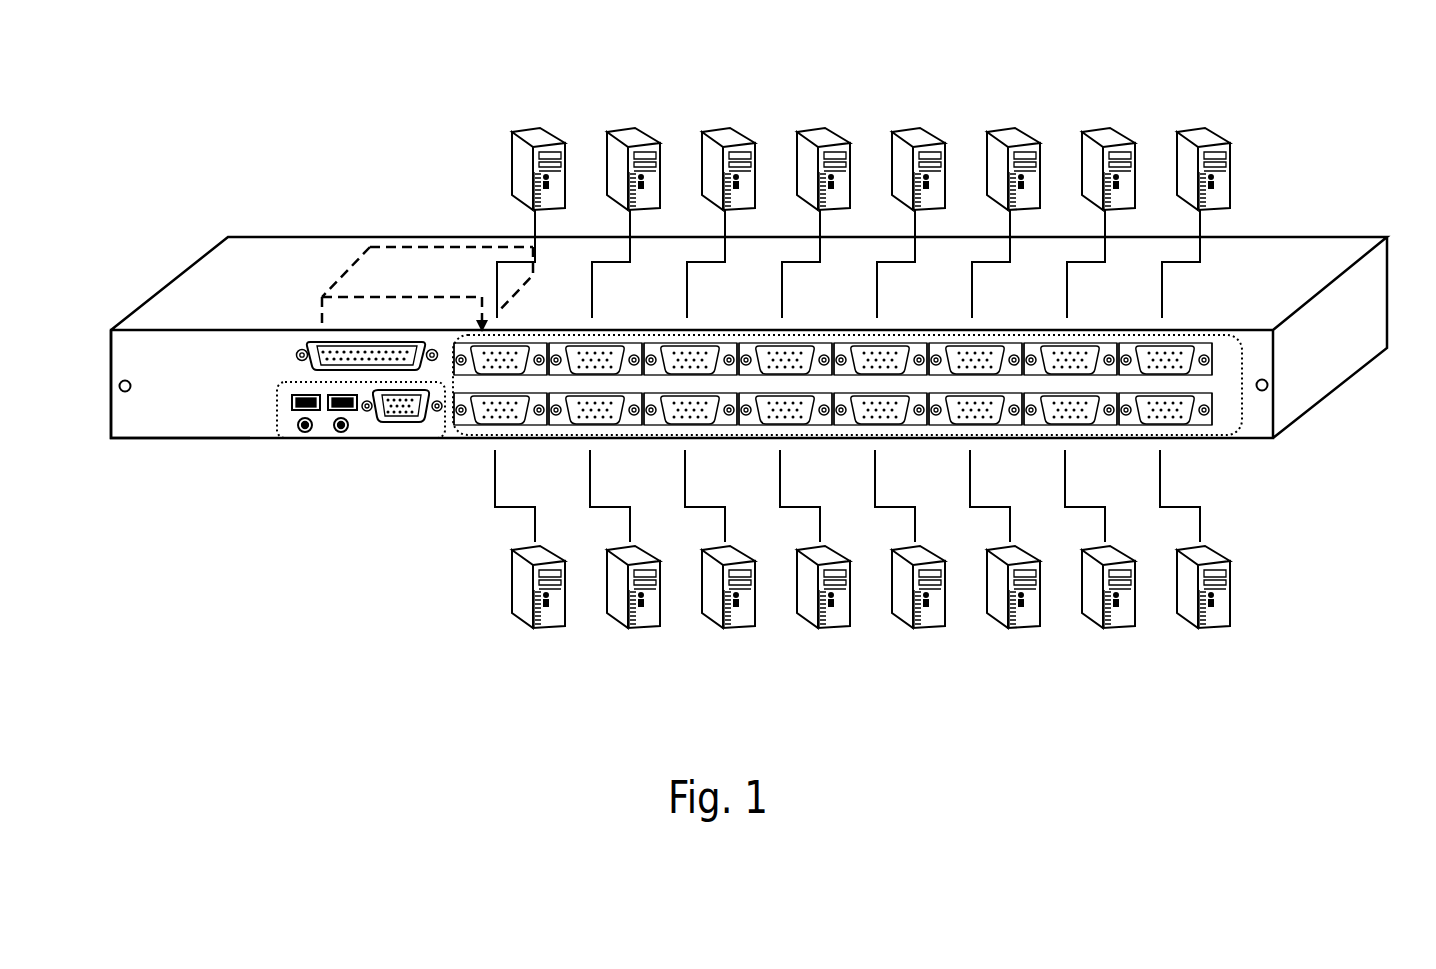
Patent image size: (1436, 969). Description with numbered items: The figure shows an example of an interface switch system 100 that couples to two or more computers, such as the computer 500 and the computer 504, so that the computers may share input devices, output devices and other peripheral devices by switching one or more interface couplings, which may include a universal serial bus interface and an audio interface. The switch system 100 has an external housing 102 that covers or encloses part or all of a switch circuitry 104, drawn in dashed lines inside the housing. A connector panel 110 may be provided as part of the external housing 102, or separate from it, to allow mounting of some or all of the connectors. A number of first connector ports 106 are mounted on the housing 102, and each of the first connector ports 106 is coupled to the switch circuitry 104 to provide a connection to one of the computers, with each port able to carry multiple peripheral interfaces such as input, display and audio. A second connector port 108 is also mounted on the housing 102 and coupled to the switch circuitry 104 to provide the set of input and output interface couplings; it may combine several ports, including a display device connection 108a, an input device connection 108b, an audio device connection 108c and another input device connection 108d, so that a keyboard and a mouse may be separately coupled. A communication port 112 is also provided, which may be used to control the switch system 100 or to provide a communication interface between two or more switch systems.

The interface switch system 100 is at (156, 170).
The external housing 102 is at (317, 237).
The switch circuitry 104 is at (413, 266).
The first connector ports 106 is at (1227, 437).
The second connector port 108 is at (276, 440).
The display device connection 108a is at (418, 432).
The input device connection 108b is at (357, 410).
The audio device connection 108c is at (320, 410).
The another input device connection 108d is at (303, 432).
The connector panel 110 is at (147, 417).
The communication port 112 is at (308, 338).
The computer 500 is at (520, 131).
The computer 504 is at (617, 131).